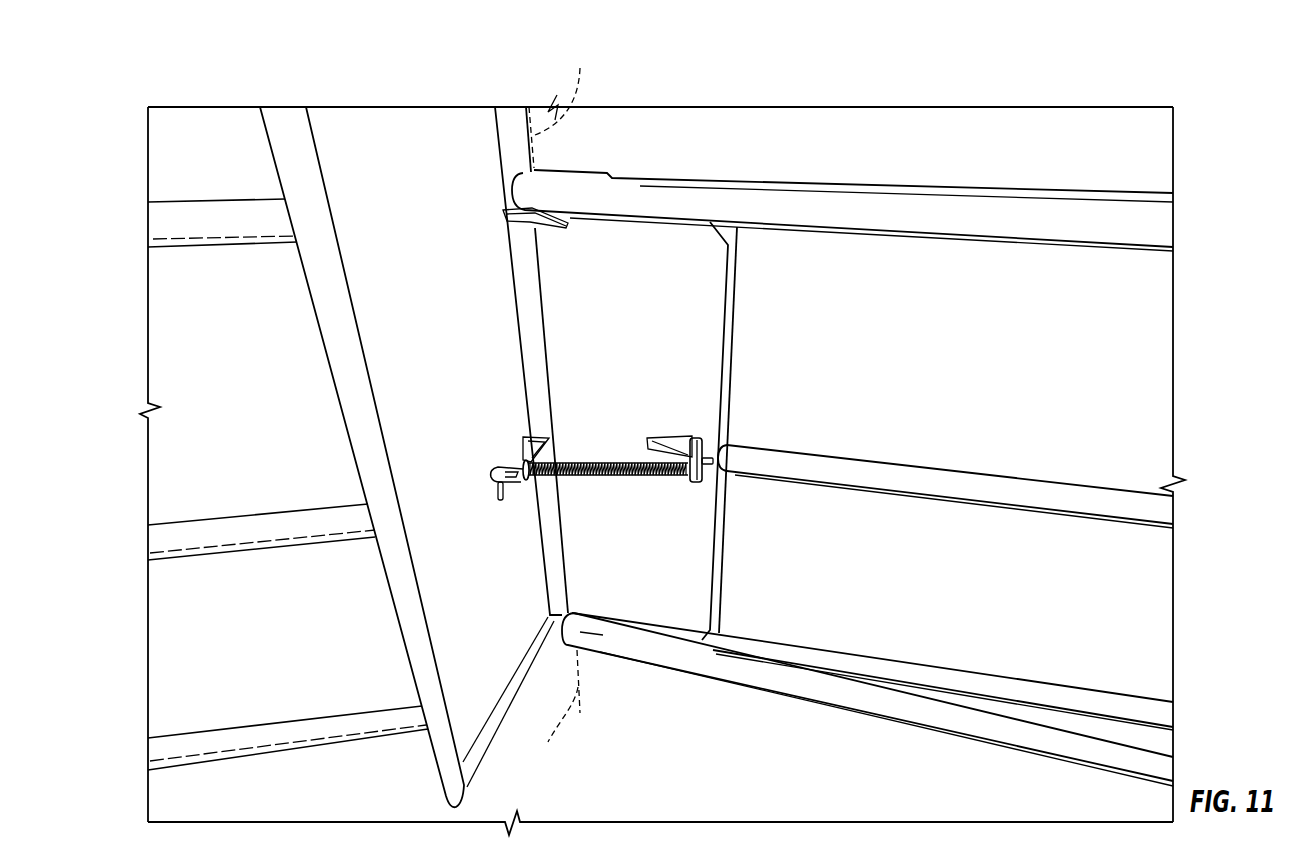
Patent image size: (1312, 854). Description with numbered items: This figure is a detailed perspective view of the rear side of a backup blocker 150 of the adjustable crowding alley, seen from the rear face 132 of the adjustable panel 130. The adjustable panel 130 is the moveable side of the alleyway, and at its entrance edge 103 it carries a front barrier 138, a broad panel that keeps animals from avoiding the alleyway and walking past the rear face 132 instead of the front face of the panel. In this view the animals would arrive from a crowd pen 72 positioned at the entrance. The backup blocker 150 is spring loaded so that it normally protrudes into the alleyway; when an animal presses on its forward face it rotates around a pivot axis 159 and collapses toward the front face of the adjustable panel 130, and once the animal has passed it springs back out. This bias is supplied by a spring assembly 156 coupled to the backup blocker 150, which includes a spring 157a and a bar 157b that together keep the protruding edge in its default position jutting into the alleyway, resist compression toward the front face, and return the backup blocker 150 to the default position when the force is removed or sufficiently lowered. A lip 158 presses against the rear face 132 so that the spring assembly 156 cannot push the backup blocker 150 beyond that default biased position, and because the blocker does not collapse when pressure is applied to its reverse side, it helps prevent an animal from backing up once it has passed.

The crowd pen 72 is at (198, 218).
The entrance edge 103 is at (515, 118).
The adjustable panel 130 is at (938, 202).
The rear face 132 is at (1037, 263).
The front barrier 138 is at (387, 122).
The backup blocker 150 is at (652, 242).
The spring assembly 156 is at (611, 478).
The spring 157a is at (557, 476).
The bar 157b is at (510, 464).
The lip 158 is at (710, 242).
The pivot axis 159 is at (556, 402).